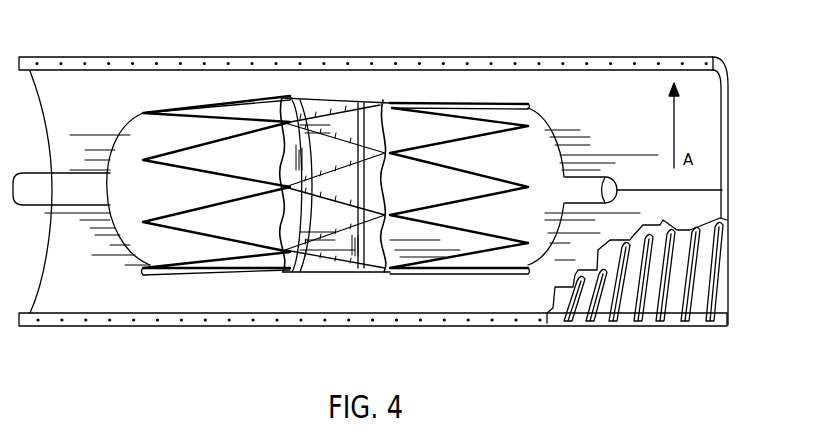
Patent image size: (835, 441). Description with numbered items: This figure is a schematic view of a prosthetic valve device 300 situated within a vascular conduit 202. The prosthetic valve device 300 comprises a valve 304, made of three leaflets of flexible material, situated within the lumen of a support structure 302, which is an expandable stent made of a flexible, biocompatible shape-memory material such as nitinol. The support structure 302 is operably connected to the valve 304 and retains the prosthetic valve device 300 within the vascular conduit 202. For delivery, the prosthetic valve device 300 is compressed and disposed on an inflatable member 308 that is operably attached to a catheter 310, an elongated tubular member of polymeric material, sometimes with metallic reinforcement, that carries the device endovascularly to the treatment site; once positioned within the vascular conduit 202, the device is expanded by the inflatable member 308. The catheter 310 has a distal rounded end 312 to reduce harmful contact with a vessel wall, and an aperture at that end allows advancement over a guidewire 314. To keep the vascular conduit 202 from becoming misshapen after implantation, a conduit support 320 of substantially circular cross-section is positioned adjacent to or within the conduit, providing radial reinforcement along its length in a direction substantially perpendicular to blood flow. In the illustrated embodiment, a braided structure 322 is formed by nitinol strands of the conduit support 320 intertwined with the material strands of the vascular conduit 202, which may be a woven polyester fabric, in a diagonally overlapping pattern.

The vascular conduit 202 is at (87, 327).
The prosthetic valve device 300 is at (480, 86).
The support structure 302 is at (315, 96).
The valve 304 is at (348, 187).
The inflatable member 308 is at (135, 167).
The catheter 310 is at (80, 187).
The distal rounded end 312 is at (618, 190).
The guidewire 314 is at (703, 190).
The conduit support 320 is at (625, 307).
The braided structure 322 is at (687, 318).